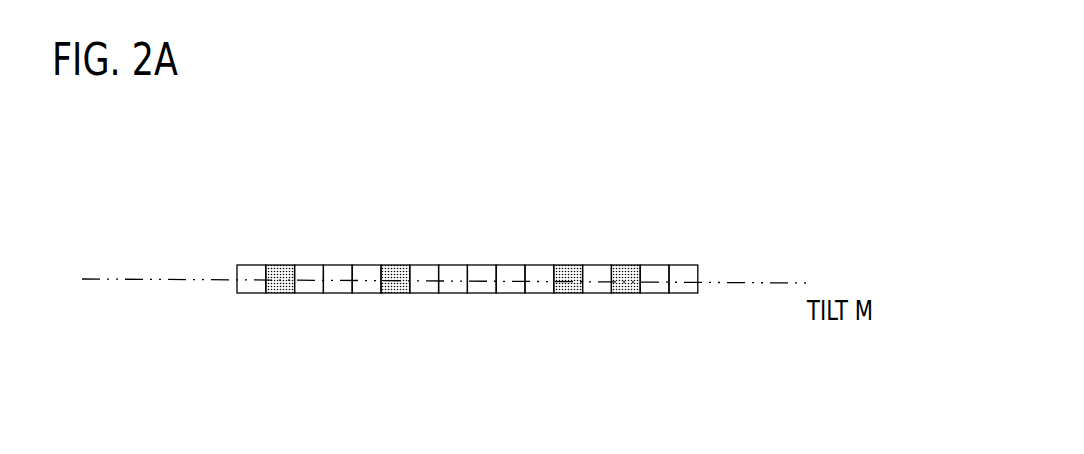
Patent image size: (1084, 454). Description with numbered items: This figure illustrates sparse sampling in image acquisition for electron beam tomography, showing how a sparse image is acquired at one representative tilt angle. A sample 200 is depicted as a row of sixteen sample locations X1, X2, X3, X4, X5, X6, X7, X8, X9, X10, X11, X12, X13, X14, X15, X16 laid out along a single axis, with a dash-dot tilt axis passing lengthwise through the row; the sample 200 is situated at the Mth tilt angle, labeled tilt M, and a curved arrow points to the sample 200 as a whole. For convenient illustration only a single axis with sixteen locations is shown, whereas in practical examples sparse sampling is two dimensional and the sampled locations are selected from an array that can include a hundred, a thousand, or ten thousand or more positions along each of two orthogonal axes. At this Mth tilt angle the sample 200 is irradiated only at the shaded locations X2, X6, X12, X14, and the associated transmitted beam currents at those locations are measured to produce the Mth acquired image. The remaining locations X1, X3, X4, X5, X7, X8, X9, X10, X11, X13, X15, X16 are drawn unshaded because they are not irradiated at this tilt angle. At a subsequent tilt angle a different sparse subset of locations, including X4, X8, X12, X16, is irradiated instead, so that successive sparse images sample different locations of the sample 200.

The sample 200 is at (426, 287).
The sample location X1 is at (248, 294).
The sample location X2 is at (278, 265).
The sample location X3 is at (313, 297).
The sample location X4 is at (337, 265).
The sample location X5 is at (375, 294).
The sample location X6 is at (391, 265).
The sample location X7 is at (427, 298).
The sample location X8 is at (453, 265).
The sample location X9 is at (488, 294).
The sample location X10 is at (522, 265).
The sample location X11 is at (548, 294).
The sample location X12 is at (572, 265).
The sample location X13 is at (600, 294).
The sample location X14 is at (637, 265).
The sample location X15 is at (653, 294).
The sample location X16 is at (683, 265).